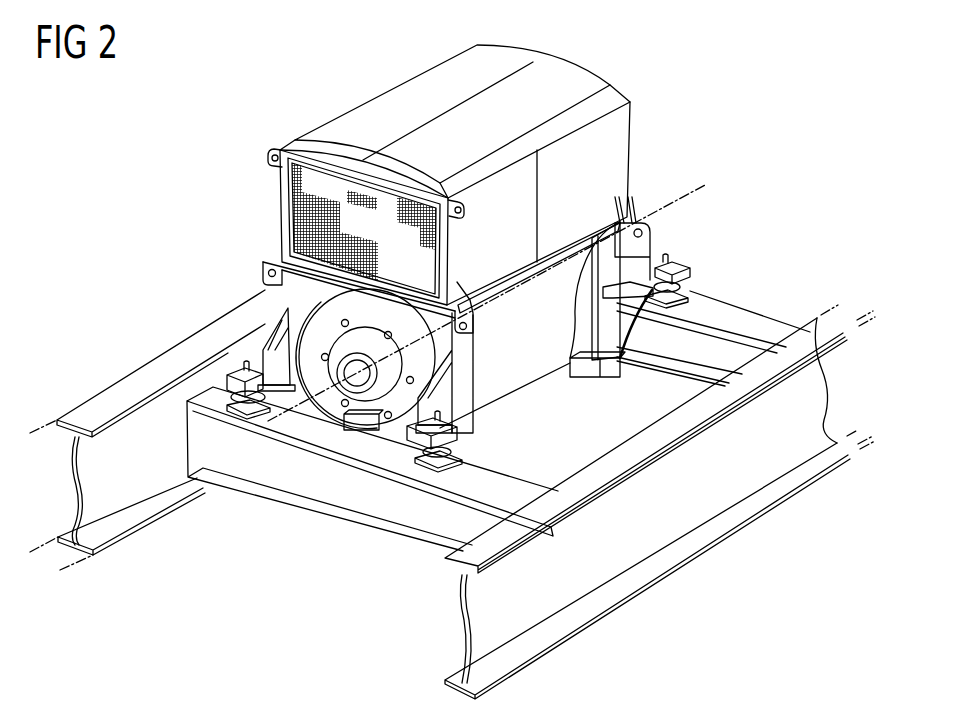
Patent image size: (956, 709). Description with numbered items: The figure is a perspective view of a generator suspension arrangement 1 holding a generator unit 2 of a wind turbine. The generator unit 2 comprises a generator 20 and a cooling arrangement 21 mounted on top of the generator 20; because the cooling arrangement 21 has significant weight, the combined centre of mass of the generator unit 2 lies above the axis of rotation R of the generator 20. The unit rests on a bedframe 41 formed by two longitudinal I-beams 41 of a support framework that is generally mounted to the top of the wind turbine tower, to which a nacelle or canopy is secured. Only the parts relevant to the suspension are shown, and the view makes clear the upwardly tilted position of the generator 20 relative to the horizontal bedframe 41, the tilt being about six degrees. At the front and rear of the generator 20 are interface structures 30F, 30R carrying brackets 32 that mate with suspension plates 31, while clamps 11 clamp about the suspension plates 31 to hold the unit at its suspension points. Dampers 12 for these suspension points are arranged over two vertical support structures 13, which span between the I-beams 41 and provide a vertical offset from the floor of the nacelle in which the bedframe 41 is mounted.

The generator suspension arrangement 1 is at (705, 128).
The generator unit 2 is at (260, 189).
The axis of rotation R is at (486, 282).
The clamps 11 is at (675, 260).
The dampers 12 is at (684, 286).
The vertical support structures 13 is at (772, 330).
The generator 20 is at (516, 374).
The cooling arrangement 21 is at (570, 86).
The interface structure 30F is at (286, 289).
The interface structure 30R is at (603, 340).
The suspension plates 31 is at (627, 279).
The brackets 32 is at (641, 247).
The longitudinal I-beams 41 is at (92, 411).